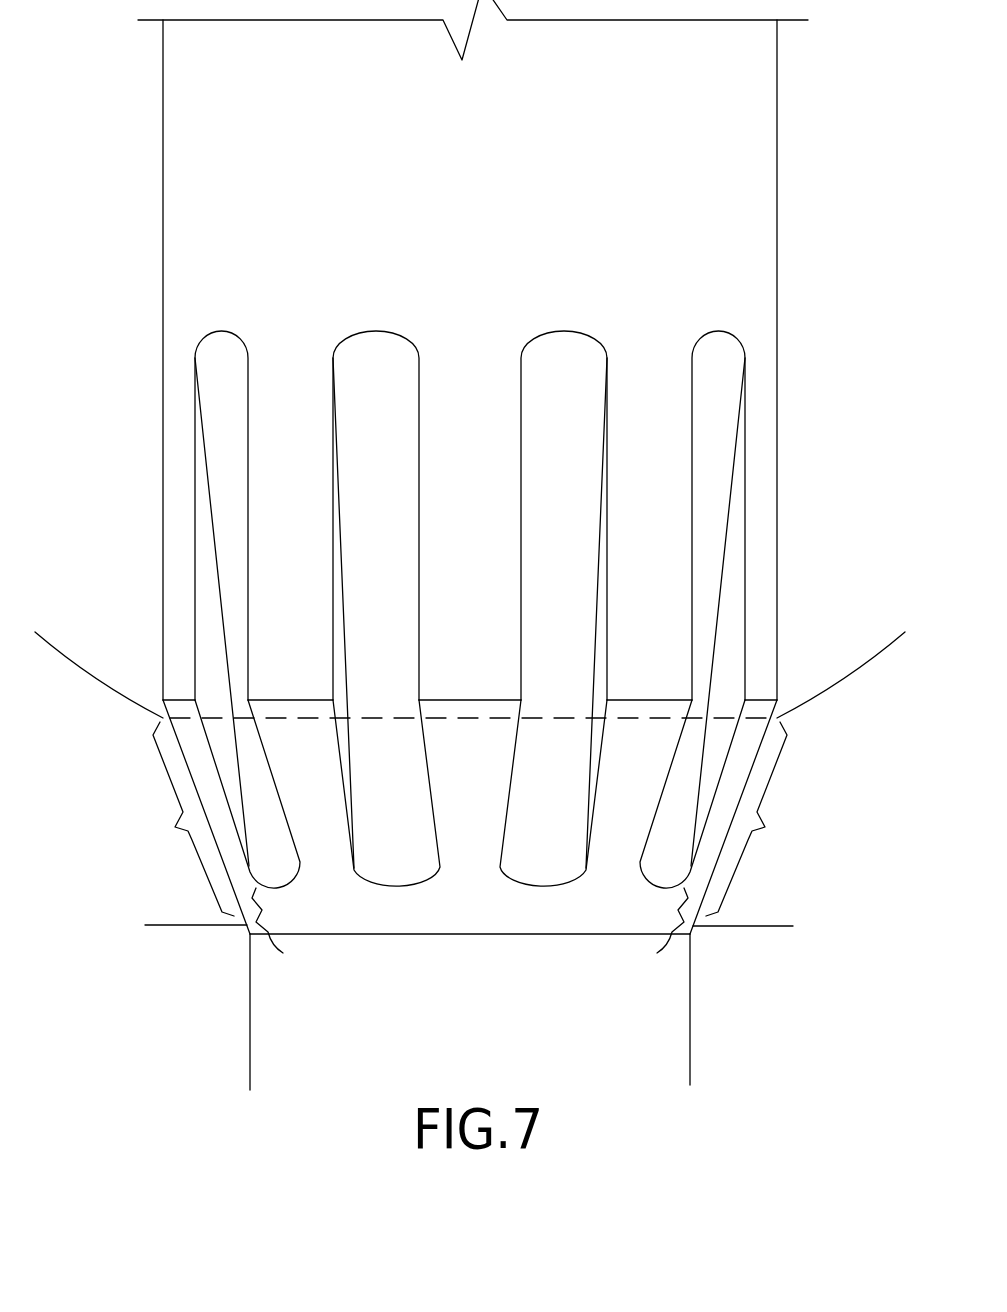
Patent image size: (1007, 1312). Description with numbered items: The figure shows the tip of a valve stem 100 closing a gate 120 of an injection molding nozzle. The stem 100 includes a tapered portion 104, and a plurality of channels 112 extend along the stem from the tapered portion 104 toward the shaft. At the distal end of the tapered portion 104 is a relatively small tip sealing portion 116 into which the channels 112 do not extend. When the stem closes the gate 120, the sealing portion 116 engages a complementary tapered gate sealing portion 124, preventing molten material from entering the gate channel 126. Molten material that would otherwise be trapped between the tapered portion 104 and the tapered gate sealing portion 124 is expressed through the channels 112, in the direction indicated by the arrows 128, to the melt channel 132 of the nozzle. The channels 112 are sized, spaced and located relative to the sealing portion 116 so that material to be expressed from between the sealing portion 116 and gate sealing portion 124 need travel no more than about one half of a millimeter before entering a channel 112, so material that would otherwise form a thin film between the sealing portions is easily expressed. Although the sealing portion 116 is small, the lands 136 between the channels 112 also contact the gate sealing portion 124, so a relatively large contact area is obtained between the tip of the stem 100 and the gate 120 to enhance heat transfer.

The tip of valve stem 100 is at (818, 147).
The tapered portion 104 is at (753, 757).
The channels 112 is at (418, 850).
The tip sealing portion 116 is at (470, 939).
The gate 120 is at (683, 1007).
The gate sealing portion 124 is at (463, 817).
The gate channel 126 is at (442, 989).
The arrows 128 is at (228, 468).
The melt channel 132 is at (145, 453).
The lands 136 is at (320, 777).